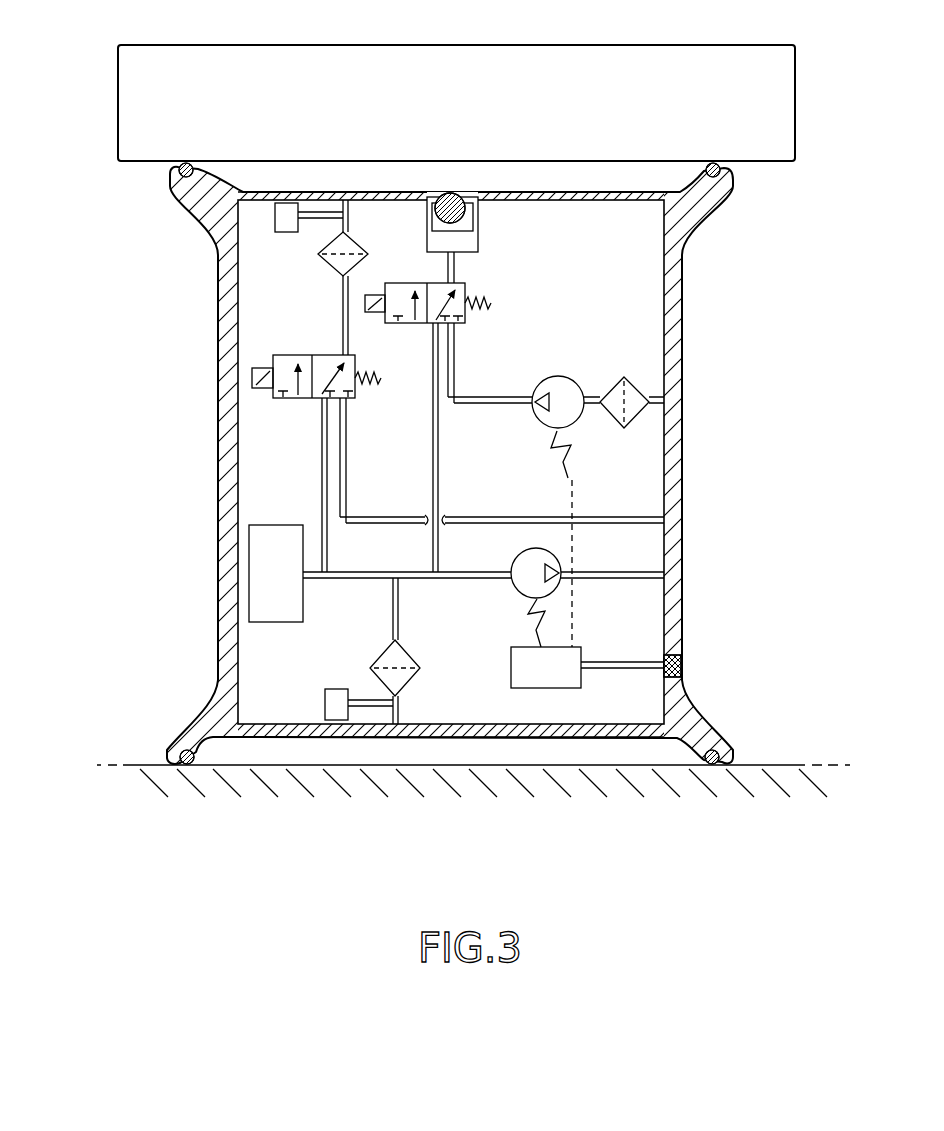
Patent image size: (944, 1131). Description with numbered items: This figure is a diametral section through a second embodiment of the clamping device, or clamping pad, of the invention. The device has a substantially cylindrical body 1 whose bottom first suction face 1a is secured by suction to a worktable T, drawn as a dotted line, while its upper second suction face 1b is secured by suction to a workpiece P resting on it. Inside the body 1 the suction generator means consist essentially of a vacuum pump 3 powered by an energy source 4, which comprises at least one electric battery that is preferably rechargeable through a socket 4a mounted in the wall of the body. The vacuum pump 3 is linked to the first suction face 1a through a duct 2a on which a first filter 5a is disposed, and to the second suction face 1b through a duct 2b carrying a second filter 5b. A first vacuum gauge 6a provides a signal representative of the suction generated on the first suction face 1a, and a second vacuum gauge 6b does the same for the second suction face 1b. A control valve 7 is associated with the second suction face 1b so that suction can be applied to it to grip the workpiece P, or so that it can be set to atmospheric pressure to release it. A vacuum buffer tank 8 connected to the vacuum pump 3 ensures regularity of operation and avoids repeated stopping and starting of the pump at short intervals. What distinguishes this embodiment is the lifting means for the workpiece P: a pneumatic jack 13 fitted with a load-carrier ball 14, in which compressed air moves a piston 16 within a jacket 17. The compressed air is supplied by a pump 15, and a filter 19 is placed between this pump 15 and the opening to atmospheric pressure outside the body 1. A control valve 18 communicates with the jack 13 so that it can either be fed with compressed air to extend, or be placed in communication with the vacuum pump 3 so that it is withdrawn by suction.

The workpiece P is at (435, 108).
The worktable T is at (773, 765).
The body 1 is at (197, 494).
The first suction face 1a is at (378, 746).
The second suction face 1b is at (551, 183).
The duct 2a is at (402, 705).
The duct 2b is at (350, 213).
The vacuum pump 3 is at (515, 591).
The energy source 4 is at (511, 668).
The socket 4a is at (684, 668).
The first filter 5a is at (385, 650).
The second filter 5b is at (328, 265).
The first vacuum gauge 6a is at (323, 708).
The second vacuum gauge 6b is at (273, 220).
The control valve 7 is at (298, 406).
The vacuum buffer tank 8 is at (282, 586).
The jack 13 is at (488, 238).
The load-carrier ball 14 is at (456, 200).
The pump 15 is at (555, 376).
The piston 16 is at (472, 217).
The jacket 17 is at (460, 262).
The control valve 18 is at (412, 332).
The filter 19 is at (638, 382).